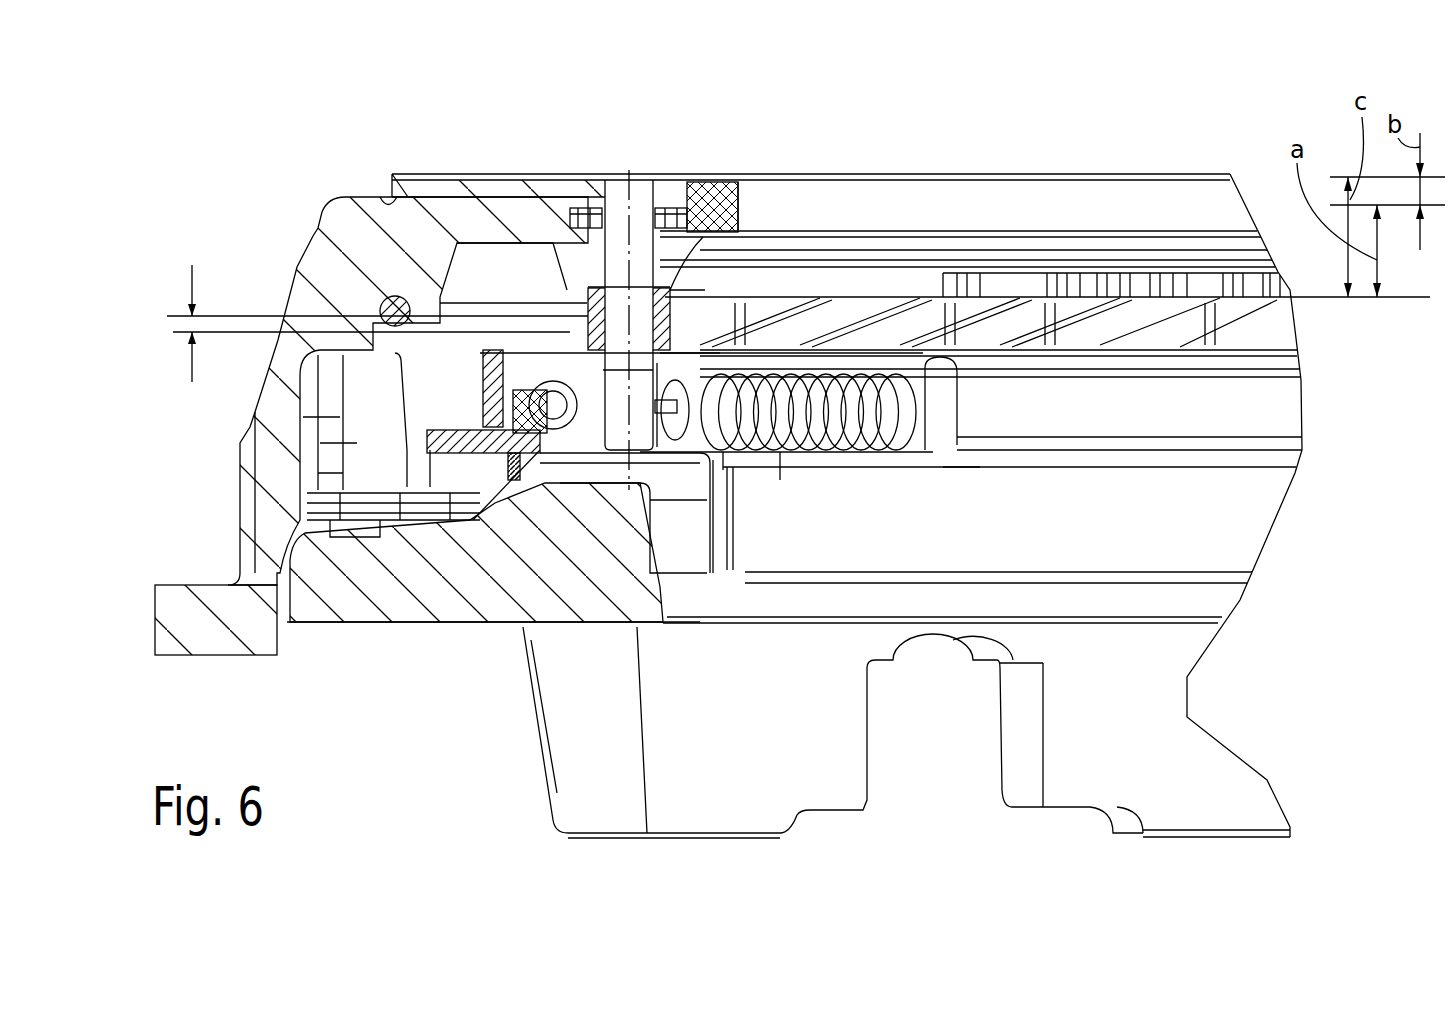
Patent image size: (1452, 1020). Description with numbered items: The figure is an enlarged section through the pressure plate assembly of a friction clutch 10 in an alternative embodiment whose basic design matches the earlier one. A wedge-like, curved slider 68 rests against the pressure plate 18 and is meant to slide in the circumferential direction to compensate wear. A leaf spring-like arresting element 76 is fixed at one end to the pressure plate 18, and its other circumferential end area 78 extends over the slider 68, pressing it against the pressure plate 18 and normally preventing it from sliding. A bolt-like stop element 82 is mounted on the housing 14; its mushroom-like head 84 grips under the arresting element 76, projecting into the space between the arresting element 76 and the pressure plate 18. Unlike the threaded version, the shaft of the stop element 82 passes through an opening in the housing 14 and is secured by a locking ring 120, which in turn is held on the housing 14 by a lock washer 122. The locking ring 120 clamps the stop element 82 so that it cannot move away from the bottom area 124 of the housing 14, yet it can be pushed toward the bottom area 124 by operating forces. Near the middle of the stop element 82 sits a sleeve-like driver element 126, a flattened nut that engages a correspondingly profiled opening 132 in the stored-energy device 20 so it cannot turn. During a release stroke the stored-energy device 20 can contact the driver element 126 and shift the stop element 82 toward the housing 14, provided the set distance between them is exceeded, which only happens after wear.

The friction clutch 10 is at (266, 141).
The housing 14 is at (311, 240).
The pressure plate 18 is at (617, 587).
The stored-energy device 20 is at (805, 303).
The slider 68 is at (490, 520).
The arresting element 76 is at (513, 500).
The end area of the arresting element 78 is at (472, 515).
The stop element 82 is at (647, 258).
The head 84 is at (577, 462).
The locking ring 120 is at (598, 258).
The lock washer 122 is at (663, 207).
The bottom area of the housing 124 is at (443, 205).
The driver element 126 is at (737, 232).
The opening 132 is at (587, 350).